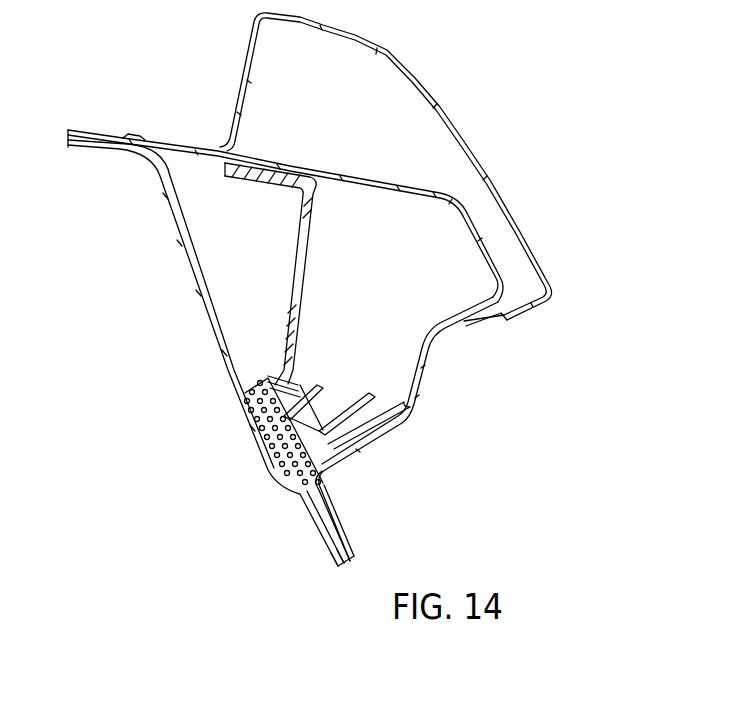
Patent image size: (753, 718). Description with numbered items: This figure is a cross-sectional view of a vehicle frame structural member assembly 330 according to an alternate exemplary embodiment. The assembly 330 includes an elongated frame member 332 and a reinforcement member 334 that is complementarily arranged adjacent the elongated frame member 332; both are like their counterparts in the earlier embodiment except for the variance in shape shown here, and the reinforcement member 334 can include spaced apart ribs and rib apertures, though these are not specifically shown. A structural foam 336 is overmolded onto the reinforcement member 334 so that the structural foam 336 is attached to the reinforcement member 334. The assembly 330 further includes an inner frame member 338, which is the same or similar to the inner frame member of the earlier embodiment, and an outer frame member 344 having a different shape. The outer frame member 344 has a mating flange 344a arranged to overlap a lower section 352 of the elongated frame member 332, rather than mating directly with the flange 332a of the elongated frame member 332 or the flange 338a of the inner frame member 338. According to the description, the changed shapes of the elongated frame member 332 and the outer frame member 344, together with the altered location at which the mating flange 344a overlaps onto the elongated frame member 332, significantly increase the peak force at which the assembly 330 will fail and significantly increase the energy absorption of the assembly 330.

The vehicle frame structural member assembly 330 is at (570, 180).
The elongated frame member 332 is at (374, 174).
The flange 332a is at (343, 532).
The reinforcement member 334 is at (278, 335).
The structural foam 336 is at (268, 454).
The inner frame member 338 is at (174, 258).
The flange 338a is at (337, 556).
The outer frame member 344 is at (470, 130).
The mating flange 344a is at (477, 326).
The lower section 352 is at (467, 321).